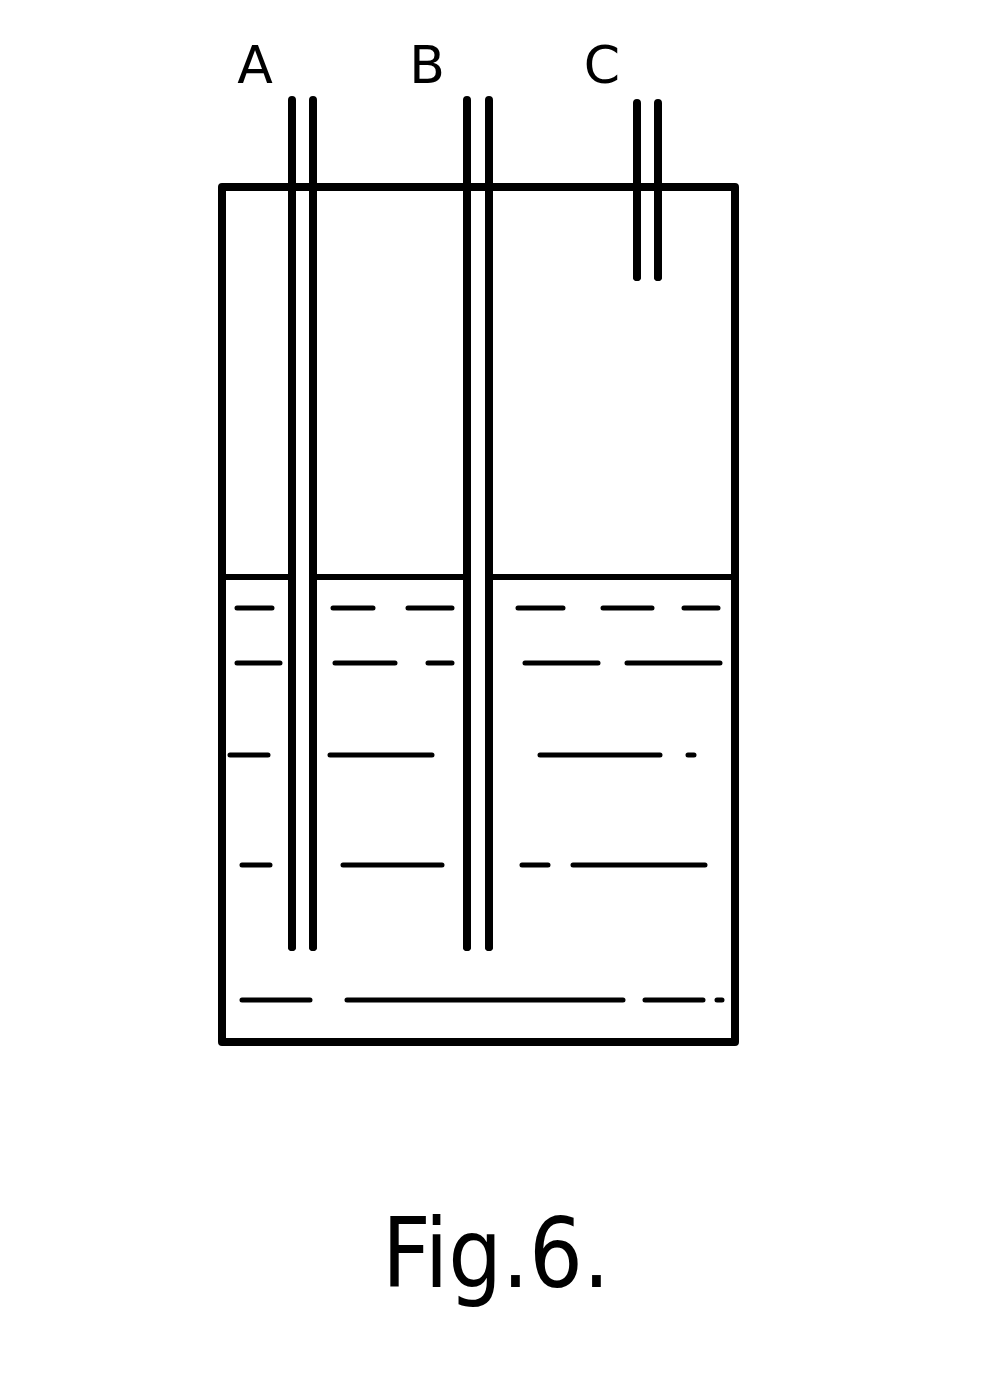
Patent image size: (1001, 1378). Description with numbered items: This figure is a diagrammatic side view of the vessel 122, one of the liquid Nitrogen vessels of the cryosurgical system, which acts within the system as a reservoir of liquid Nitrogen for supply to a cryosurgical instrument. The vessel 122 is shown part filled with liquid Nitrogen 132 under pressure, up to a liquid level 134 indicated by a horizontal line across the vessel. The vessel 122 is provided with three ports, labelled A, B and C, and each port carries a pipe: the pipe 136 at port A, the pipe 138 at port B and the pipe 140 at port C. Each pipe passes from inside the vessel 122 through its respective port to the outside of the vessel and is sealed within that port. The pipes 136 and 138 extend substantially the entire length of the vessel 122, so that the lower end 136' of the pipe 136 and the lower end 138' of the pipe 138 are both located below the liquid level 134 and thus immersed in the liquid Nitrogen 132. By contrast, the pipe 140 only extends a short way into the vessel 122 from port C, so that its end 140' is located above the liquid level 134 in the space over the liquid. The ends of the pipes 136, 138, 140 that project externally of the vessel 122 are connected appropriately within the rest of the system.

The vessel 122 is at (735, 707).
The liquid Nitrogen 132 is at (712, 917).
The liquid level 134 is at (692, 576).
The pipe 136 is at (194, 523).
The lower end of pipe 136' is at (177, 927).
The pipe 138 is at (570, 523).
The lower end of pipe 138' is at (413, 1028).
The pipe 140 is at (702, 138).
The end of pipe 140' is at (763, 243).